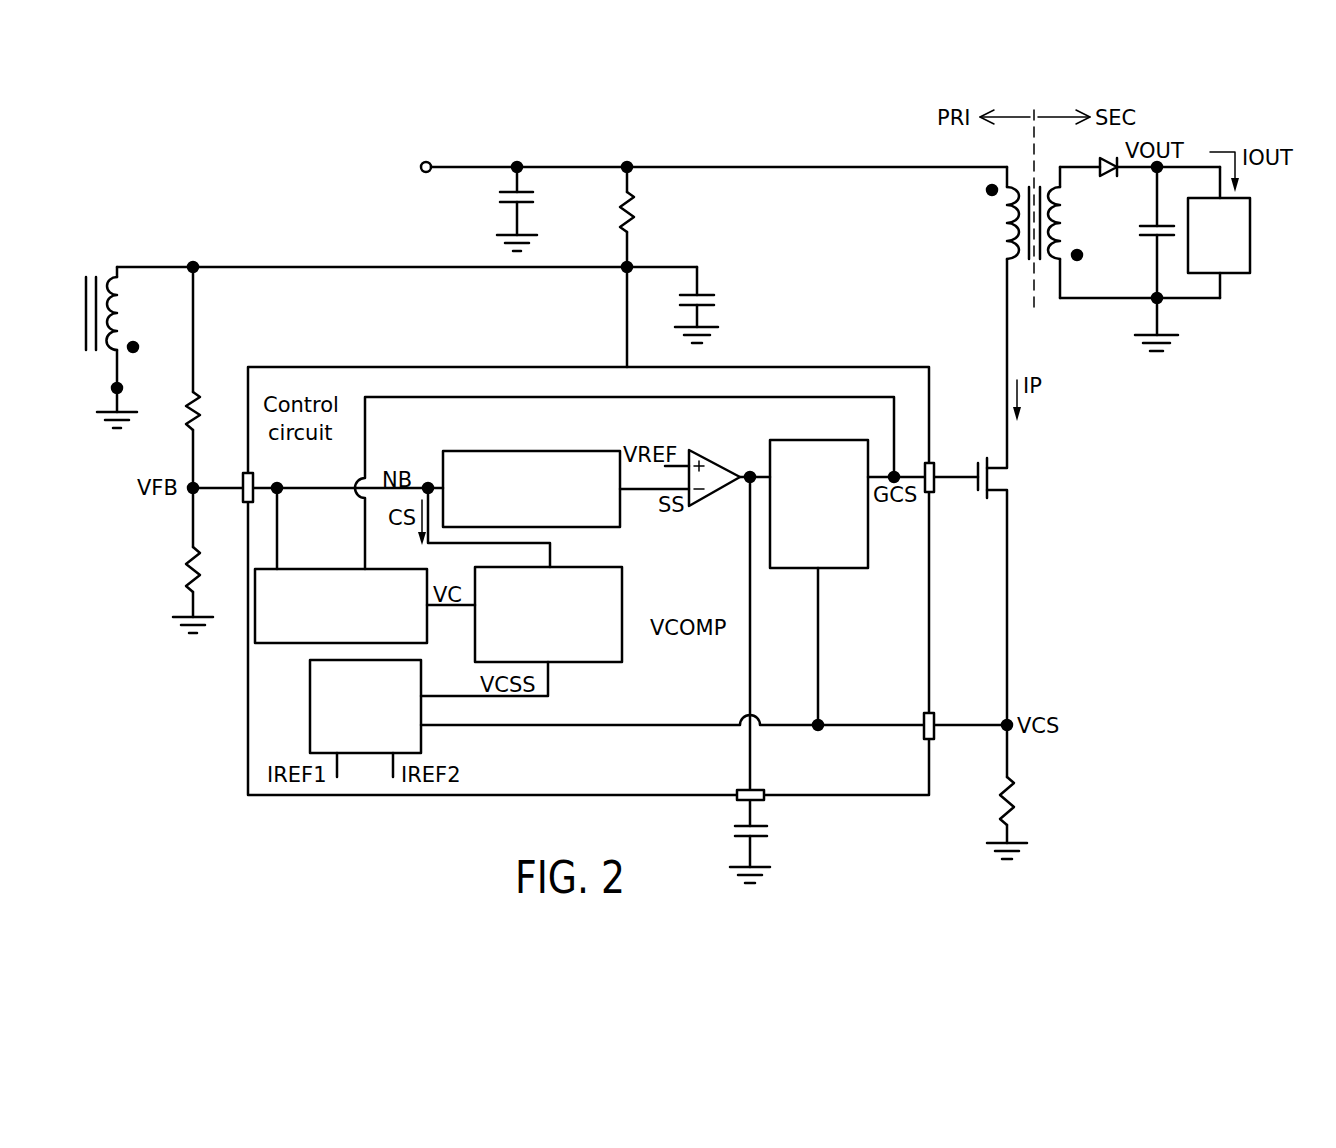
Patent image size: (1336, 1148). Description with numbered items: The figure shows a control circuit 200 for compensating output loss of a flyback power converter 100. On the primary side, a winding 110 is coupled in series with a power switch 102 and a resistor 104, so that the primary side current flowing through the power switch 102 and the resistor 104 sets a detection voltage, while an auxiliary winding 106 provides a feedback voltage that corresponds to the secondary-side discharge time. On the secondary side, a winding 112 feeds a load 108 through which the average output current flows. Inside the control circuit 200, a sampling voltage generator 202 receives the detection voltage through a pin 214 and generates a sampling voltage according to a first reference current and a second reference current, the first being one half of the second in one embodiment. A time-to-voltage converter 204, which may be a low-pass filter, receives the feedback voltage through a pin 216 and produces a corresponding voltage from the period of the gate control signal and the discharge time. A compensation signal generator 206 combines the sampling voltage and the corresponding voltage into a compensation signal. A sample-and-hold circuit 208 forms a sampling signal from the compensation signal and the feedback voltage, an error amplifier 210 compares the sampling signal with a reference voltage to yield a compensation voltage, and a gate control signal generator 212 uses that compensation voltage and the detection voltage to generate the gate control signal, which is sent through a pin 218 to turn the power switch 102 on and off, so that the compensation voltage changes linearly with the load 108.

The power converter 100 is at (280, 149).
The power switch 102 is at (1012, 477).
The resistor 104 is at (1020, 800).
The auxiliary winding 106 is at (123, 308).
The load 108 is at (1253, 235).
The winding of the primary side 110 is at (1003, 230).
The winding of the secondary side 112 is at (1065, 215).
The control circuit 200 is at (765, 367).
The sampling voltage generator 202 is at (310, 697).
The time-to-voltage converter 204 is at (297, 569).
The compensation signal generator 206 is at (608, 567).
The sample-and-hold circuit 208 is at (485, 451).
The error amplifier 210 is at (715, 460).
The gate control signal generator 212 is at (812, 440).
The pin 214 is at (937, 713).
The pin 216 is at (240, 482).
The pin 218 is at (935, 470).